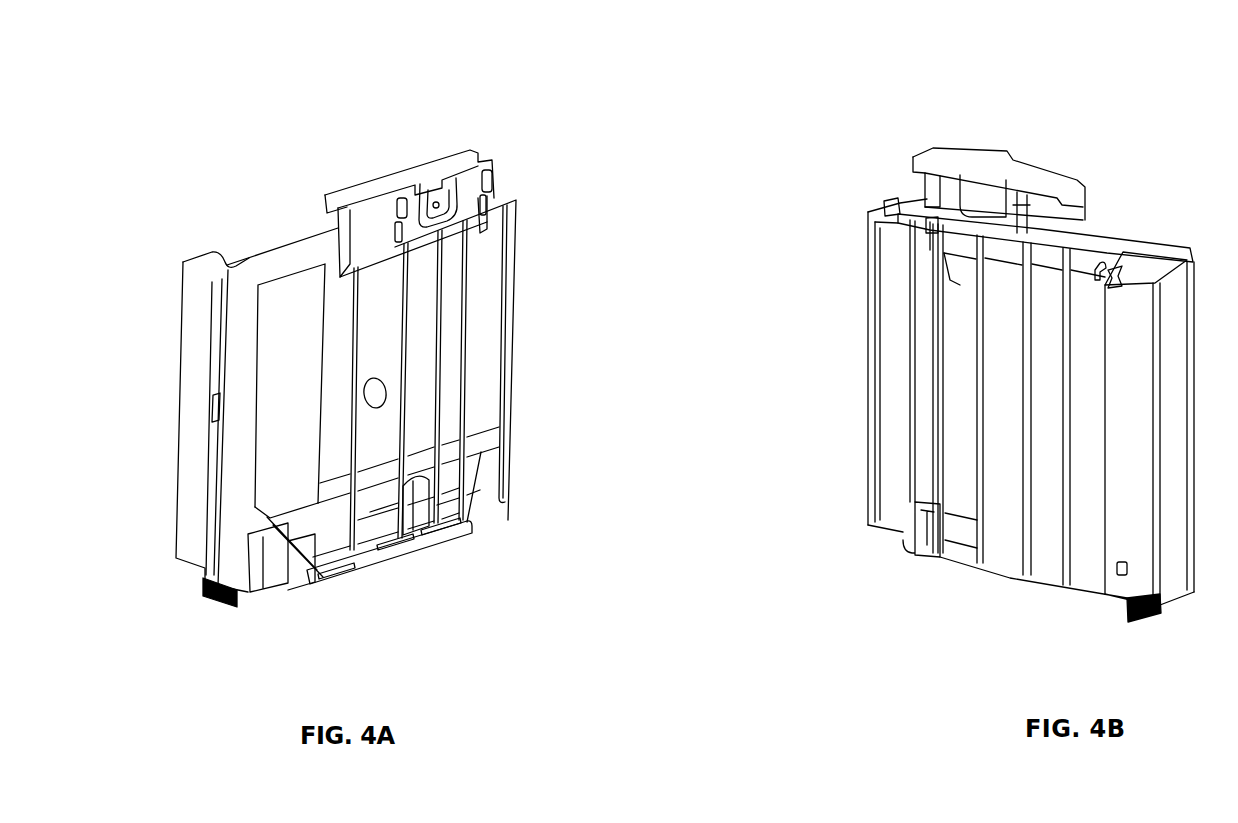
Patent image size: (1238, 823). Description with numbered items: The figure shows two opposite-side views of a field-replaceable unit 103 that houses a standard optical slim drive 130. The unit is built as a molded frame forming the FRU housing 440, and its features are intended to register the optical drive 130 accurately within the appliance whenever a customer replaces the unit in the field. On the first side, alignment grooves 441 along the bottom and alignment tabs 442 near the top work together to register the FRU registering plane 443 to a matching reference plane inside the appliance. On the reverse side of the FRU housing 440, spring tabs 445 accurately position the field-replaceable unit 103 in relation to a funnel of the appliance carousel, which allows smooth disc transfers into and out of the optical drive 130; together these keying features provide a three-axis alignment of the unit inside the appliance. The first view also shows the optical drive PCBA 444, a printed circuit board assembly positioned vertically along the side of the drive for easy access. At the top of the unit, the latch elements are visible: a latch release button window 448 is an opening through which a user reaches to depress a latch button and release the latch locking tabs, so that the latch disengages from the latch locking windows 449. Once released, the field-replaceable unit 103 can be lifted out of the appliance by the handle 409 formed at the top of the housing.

In FIG. 4A, the field-replaceable unit (FRU) 103 is at (145, 34).
In FIG. 4B, the field-replaceable unit (FRU) 103 is at (1159, 47).
In FIG. 4A, the FRU housing 440 is at (253, 273).
In FIG. 4A, the handle 409 is at (430, 163).
In FIG. 4B, the handle 409 is at (958, 156).
In FIG. 4A, the alignment tabs 442 is at (488, 180).
In FIG. 4A, the latch release button window 448 is at (438, 204).
In FIG. 4B, the latch release button window 448 is at (963, 198).
In FIG. 4A, the latch locking windows 449 is at (484, 207).
In FIG. 4B, the spring tabs 445 is at (915, 510).
In FIG. 4A, the optical drive 130 is at (378, 353).
In FIG. 4A, the FRU registering plane 443 is at (475, 432).
In FIG. 4A, the alignment grooves 441 is at (313, 580).
In FIG. 4A, the optical drive PCBA 444 is at (206, 548).